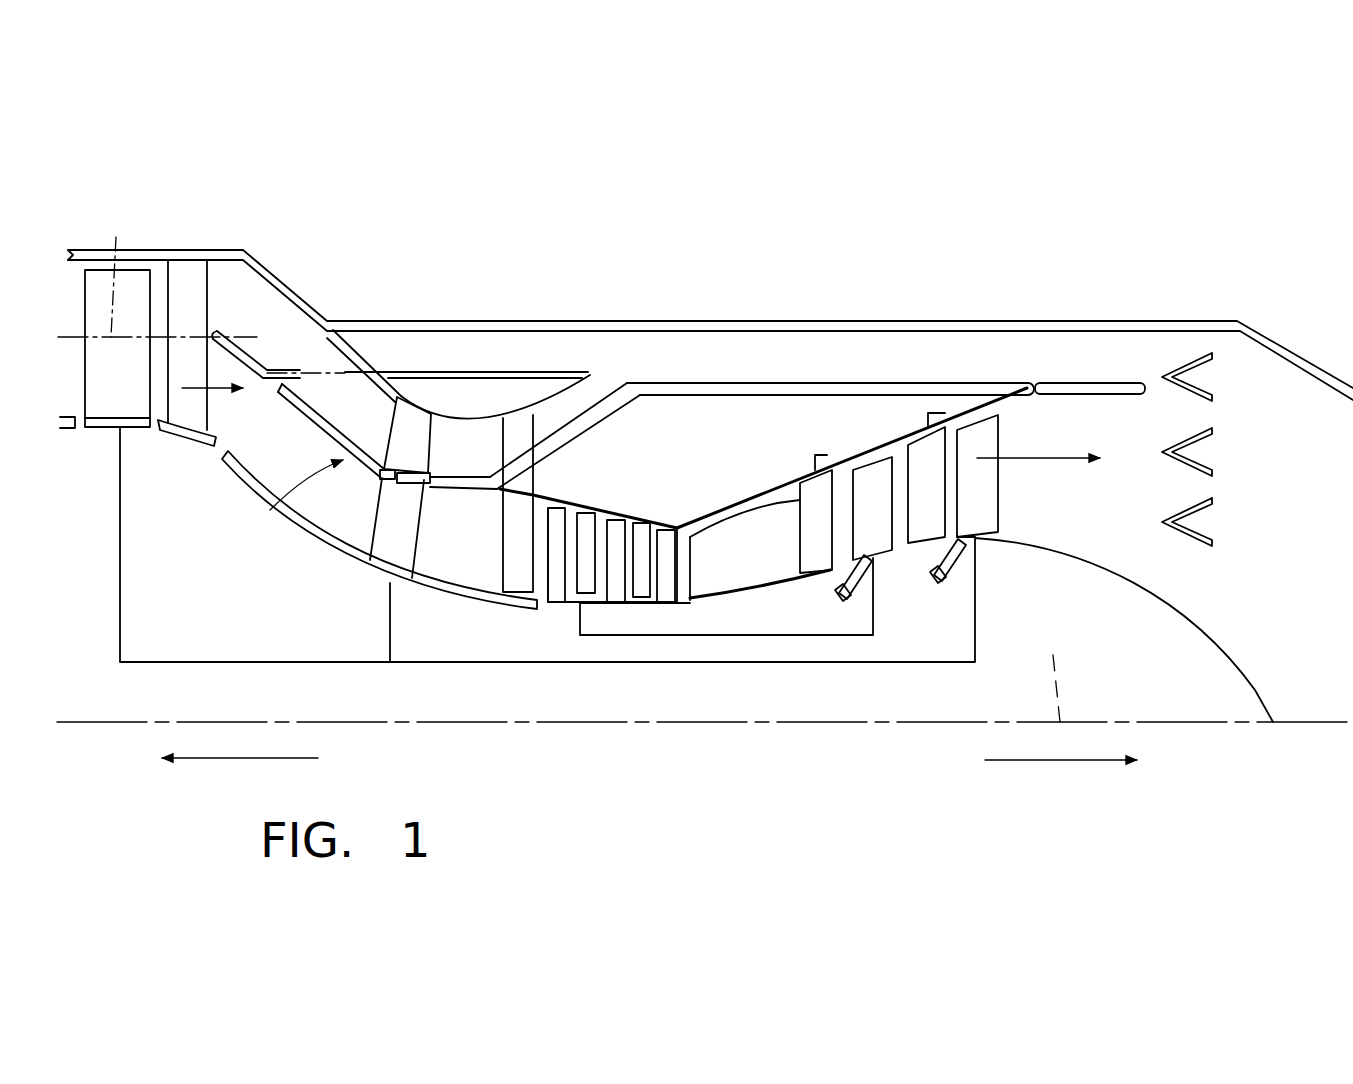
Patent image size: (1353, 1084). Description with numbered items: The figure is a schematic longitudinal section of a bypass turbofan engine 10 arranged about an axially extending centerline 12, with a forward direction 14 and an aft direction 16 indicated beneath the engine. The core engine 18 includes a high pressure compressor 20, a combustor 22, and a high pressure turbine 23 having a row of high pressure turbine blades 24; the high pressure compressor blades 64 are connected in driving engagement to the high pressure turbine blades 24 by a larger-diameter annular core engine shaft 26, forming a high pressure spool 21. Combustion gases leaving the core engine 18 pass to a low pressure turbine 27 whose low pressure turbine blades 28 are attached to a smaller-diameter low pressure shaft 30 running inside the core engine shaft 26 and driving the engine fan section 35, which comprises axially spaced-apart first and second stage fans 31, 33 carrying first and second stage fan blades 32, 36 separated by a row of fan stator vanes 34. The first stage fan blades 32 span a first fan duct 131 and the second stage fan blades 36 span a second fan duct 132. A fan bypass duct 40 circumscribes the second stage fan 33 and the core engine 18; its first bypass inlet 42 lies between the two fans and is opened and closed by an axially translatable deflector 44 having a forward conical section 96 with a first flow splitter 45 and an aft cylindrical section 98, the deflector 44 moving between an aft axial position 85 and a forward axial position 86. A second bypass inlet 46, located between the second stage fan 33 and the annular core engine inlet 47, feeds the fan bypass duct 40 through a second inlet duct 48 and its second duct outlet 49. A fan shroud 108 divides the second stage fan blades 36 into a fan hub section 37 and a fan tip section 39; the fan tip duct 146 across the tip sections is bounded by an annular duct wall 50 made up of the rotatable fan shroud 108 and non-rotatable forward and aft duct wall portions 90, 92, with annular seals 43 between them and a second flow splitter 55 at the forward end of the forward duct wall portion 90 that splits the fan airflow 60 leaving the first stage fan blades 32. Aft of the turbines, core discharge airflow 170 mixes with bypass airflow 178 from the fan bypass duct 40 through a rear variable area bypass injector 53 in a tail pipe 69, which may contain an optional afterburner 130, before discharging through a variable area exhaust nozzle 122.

The bypass turbofan engine 10 is at (680, 312).
The centerline 12 is at (1053, 655).
The forward direction 14 is at (270, 758).
The aft direction 16 is at (1072, 760).
The core engine 18 is at (721, 502).
The high pressure compressor 20 is at (594, 502).
The high pressure spool 21 is at (470, 684).
The combustor 22 is at (734, 561).
The high pressure turbine 23 is at (836, 576).
The high pressure turbine blades 24 is at (880, 478).
The core engine shaft 26 is at (613, 637).
The low pressure turbine 27 is at (933, 554).
The low pressure turbine blades 28 is at (987, 498).
The low pressure shaft 30 is at (822, 663).
The first stage fan 31 is at (97, 192).
The first stage fan blades 32 is at (104, 373).
The second stage fan 33 is at (419, 392).
The fan stator vanes 34 is at (210, 270).
The engine fan section 35 is at (342, 270).
The second stage fan blades 36 is at (375, 537).
The fan hub section 37 is at (397, 553).
The fan tip section 39 is at (413, 445).
The fan bypass duct 40 is at (842, 380).
The first bypass inlet 42 is at (332, 350).
The annular seals 43 is at (381, 482).
The deflector 44 is at (403, 372).
The first flow splitter 45 is at (348, 330).
The second bypass inlet 46 is at (498, 446).
The annular core engine inlet 47 is at (490, 577).
The second inlet duct 48 is at (558, 418).
The second duct outlet 49 is at (608, 384).
The annular duct wall 50 is at (268, 507).
The rear variable area bypass injector 53 is at (1090, 383).
The second flow splitter 55 is at (217, 443).
The fan airflow 60 is at (195, 389).
The high pressure compressor blades 64 is at (617, 530).
The tail pipe 69 is at (1075, 322).
The aft axial position 85 is at (157, 280).
The forward axial position 86 is at (355, 343).
The forward duct wall portion 90 is at (330, 432).
The aft duct wall portion 92 is at (473, 482).
The forward conical section 96 is at (383, 332).
The aft cylindrical section 98 is at (458, 375).
The fan shroud 108 is at (402, 487).
The variable area exhaust nozzle 122 is at (1284, 347).
The afterburner 130 is at (1226, 572).
The first fan duct 131 is at (185, 285).
The second fan duct 132 is at (437, 598).
The fan tip duct 146 is at (390, 418).
The core discharge airflow 170 is at (1027, 458).
The bypass airflow 178 is at (950, 352).